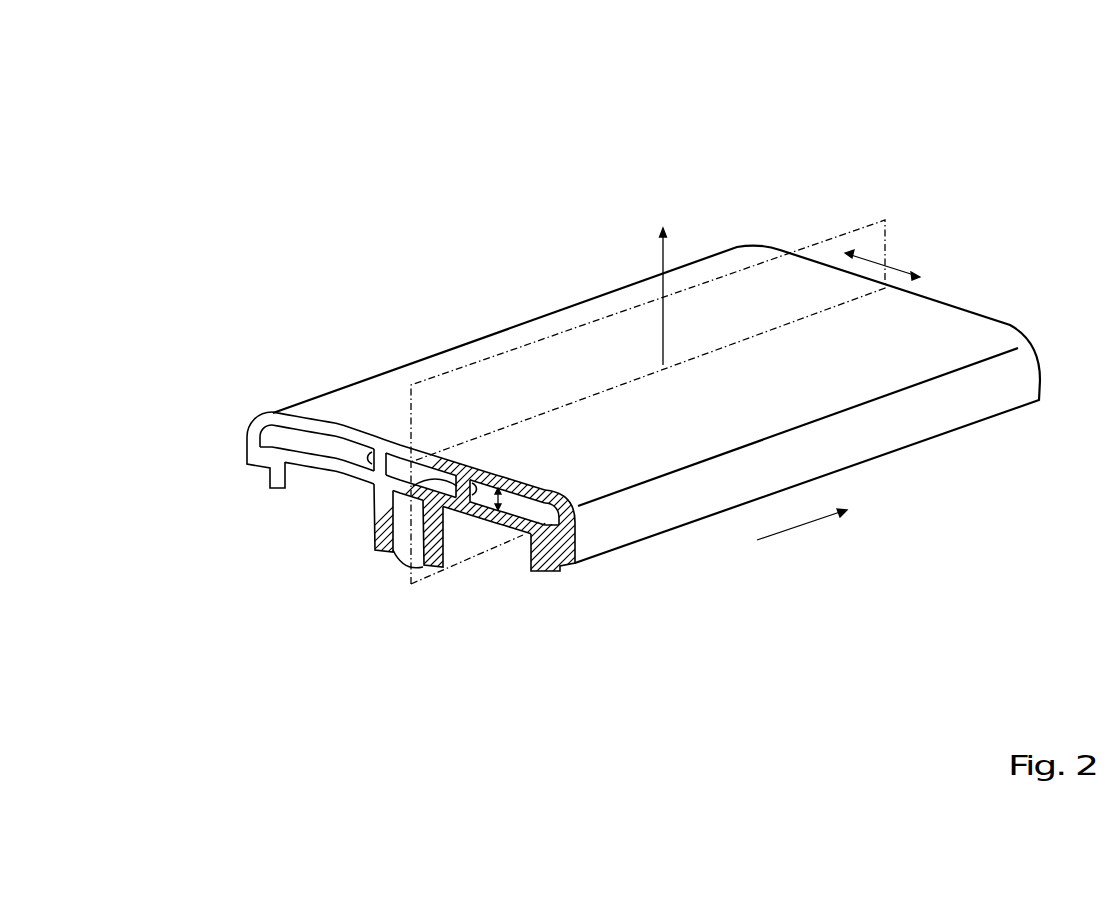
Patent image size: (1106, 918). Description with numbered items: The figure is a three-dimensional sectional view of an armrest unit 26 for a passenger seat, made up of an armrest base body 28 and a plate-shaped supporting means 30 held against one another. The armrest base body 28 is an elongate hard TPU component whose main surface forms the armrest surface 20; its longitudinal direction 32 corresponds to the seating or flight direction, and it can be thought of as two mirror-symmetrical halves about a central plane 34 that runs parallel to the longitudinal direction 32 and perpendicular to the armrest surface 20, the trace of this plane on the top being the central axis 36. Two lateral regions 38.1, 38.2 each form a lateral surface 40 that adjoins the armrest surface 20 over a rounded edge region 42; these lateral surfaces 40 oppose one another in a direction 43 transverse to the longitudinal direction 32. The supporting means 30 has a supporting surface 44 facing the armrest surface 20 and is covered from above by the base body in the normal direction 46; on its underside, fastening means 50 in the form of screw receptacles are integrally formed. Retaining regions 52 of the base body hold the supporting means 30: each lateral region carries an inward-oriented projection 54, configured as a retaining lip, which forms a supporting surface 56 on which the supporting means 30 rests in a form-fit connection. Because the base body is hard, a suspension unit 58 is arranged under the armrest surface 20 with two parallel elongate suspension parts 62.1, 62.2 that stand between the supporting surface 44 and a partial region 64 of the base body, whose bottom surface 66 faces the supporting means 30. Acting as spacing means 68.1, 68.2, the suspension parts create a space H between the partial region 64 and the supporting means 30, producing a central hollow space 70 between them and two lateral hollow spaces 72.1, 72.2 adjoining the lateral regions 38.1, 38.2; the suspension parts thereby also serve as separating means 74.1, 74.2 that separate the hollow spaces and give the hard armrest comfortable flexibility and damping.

The armrest surface 20 is at (727, 307).
The armrest unit for a passenger seat 26 is at (1053, 290).
The armrest base body 28 is at (958, 390).
The supporting means 30 is at (338, 472).
The longitudinal direction 32 is at (807, 525).
The central plane 34 is at (808, 249).
The central axis 36 is at (767, 330).
The lateral region 38.1 is at (880, 436).
The lateral region 38.2 is at (247, 445).
The lateral surface 40 is at (255, 407).
The edge region 42 is at (975, 365).
The direction transverse to the longitudinal direction 43 is at (890, 263).
The supporting surface 44 is at (311, 448).
The normal direction 46 is at (660, 313).
The fastening means 50 is at (393, 553).
The retaining region 52 is at (246, 472).
The projection 54 is at (273, 481).
The supporting surface 56 is at (273, 412).
The suspension unit 58 is at (382, 428).
The suspension part 62.1 is at (445, 565).
The suspension part 62.2 is at (380, 497).
The partial region 64 is at (517, 533).
The bottom surface 66 is at (320, 464).
The spacing means 68.1 is at (390, 553).
The spacing means 68.2 is at (372, 466).
The central hollow space 70 is at (420, 466).
The lateral hollow space 72.1 is at (491, 481).
The lateral hollow space 72.2 is at (345, 441).
The separating means 74.1 is at (433, 568).
The separating means 74.2 is at (352, 479).
The space H is at (505, 500).